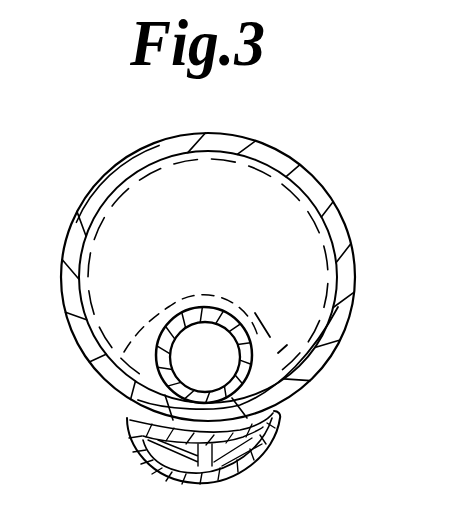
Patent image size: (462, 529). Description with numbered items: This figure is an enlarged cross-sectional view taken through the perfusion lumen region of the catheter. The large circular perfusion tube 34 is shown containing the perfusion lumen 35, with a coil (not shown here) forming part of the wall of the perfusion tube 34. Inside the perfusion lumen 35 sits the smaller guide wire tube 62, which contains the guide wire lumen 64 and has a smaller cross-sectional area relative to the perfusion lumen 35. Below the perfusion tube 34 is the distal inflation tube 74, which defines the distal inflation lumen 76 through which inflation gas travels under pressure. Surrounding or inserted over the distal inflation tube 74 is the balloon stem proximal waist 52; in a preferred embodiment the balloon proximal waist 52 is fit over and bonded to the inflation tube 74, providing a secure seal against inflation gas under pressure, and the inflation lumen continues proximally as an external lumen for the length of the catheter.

The perfusion tube 34 is at (299, 163).
The perfusion lumen 35 is at (267, 228).
The balloon stem proximal waist 52 is at (213, 483).
The guide wire tube 62 is at (252, 376).
The guide wire lumen 64 is at (215, 346).
The distal inflation tube 74 is at (238, 467).
The distal inflation lumen 76 is at (273, 432).